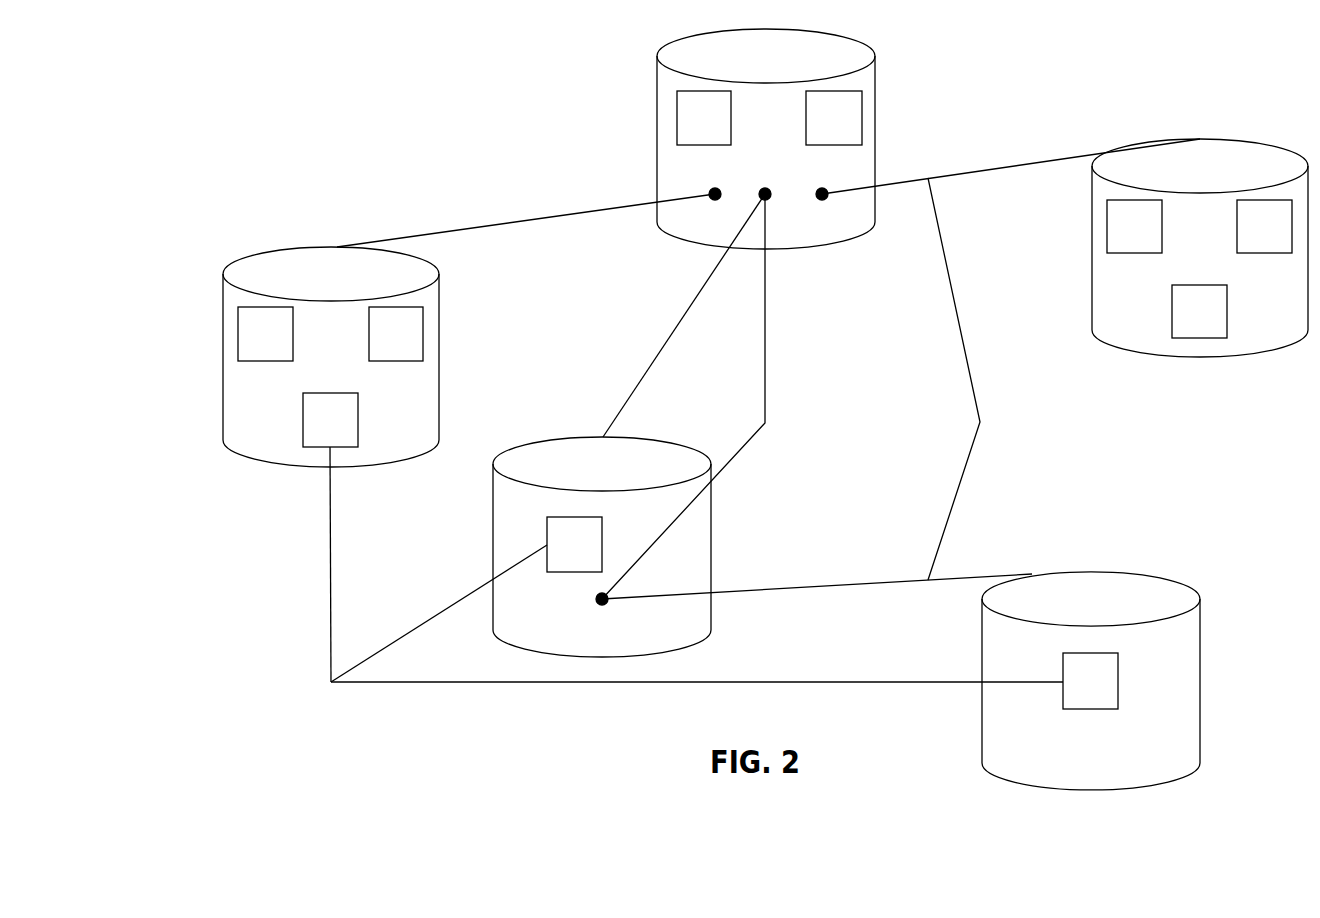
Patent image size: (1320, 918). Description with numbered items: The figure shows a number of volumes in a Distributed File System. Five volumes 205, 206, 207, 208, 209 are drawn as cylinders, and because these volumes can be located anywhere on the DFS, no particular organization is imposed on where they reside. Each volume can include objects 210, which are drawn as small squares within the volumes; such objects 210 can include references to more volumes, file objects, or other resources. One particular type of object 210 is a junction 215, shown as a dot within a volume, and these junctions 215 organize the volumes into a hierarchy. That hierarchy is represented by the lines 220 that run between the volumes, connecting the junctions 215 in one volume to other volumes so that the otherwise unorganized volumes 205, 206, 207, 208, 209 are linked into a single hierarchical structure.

The volume 205 is at (657, 138).
The volume 206 is at (1092, 246).
The volume 207 is at (223, 355).
The volume 208 is at (493, 545).
The volume 209 is at (982, 679).
The object 210 is at (673, 571).
The junction 215 is at (706, 399).
The line 220 is at (980, 379).